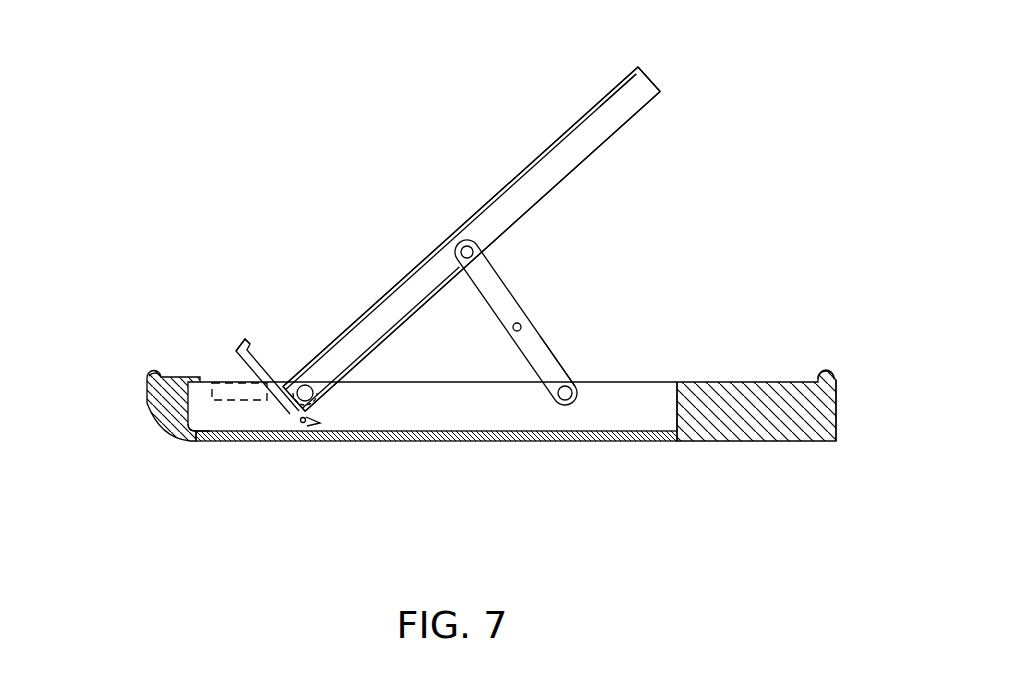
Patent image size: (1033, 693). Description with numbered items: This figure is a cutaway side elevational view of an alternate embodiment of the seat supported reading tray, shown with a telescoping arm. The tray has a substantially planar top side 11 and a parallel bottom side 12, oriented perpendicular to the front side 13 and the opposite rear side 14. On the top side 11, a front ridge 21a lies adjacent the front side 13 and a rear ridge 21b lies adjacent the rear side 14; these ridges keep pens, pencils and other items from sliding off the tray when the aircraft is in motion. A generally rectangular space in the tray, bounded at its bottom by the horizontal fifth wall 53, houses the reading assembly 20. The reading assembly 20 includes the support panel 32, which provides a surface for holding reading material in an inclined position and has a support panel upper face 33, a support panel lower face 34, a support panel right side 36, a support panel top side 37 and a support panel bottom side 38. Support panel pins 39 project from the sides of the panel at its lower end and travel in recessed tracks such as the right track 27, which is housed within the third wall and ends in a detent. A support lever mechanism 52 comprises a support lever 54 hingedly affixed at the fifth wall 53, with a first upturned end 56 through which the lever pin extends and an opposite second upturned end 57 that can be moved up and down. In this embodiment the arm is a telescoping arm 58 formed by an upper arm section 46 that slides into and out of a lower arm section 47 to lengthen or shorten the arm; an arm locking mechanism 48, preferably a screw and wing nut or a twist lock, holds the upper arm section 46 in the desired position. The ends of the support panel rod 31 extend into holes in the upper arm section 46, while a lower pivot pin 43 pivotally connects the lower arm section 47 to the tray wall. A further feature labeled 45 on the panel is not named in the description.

The top side 11 is at (720, 380).
The bottom side 12 is at (722, 442).
The front side 13 is at (147, 387).
The rear side 14 is at (837, 415).
The reading assembly 20 is at (640, 288).
The front ridge 21a is at (157, 372).
The rear ridge 21b is at (830, 373).
The right track 27 is at (225, 387).
The support panel rod 31 is at (462, 243).
The support panel 32 is at (622, 145).
The support panel upper face 33 is at (412, 272).
The support panel lower face 34 is at (545, 198).
The support panel right side 36 is at (560, 158).
The support panel top side 37 is at (657, 82).
The support panel bottom side 38 is at (287, 412).
The support panel pins 39 is at (306, 388).
The lower pivot pins 43 is at (572, 383).
The plate upper end 45 is at (613, 112).
The upper arm section 46 is at (493, 285).
The lower arm section 47 is at (542, 363).
The arm locking mechanism 48 is at (522, 317).
The support lever mechanism 52 is at (260, 358).
The fifth wall 53 is at (625, 432).
The support lever 54 is at (222, 437).
The first upturned end 56 is at (312, 423).
The second upturned end 57 is at (243, 340).
The telescoping arm 58 is at (482, 323).